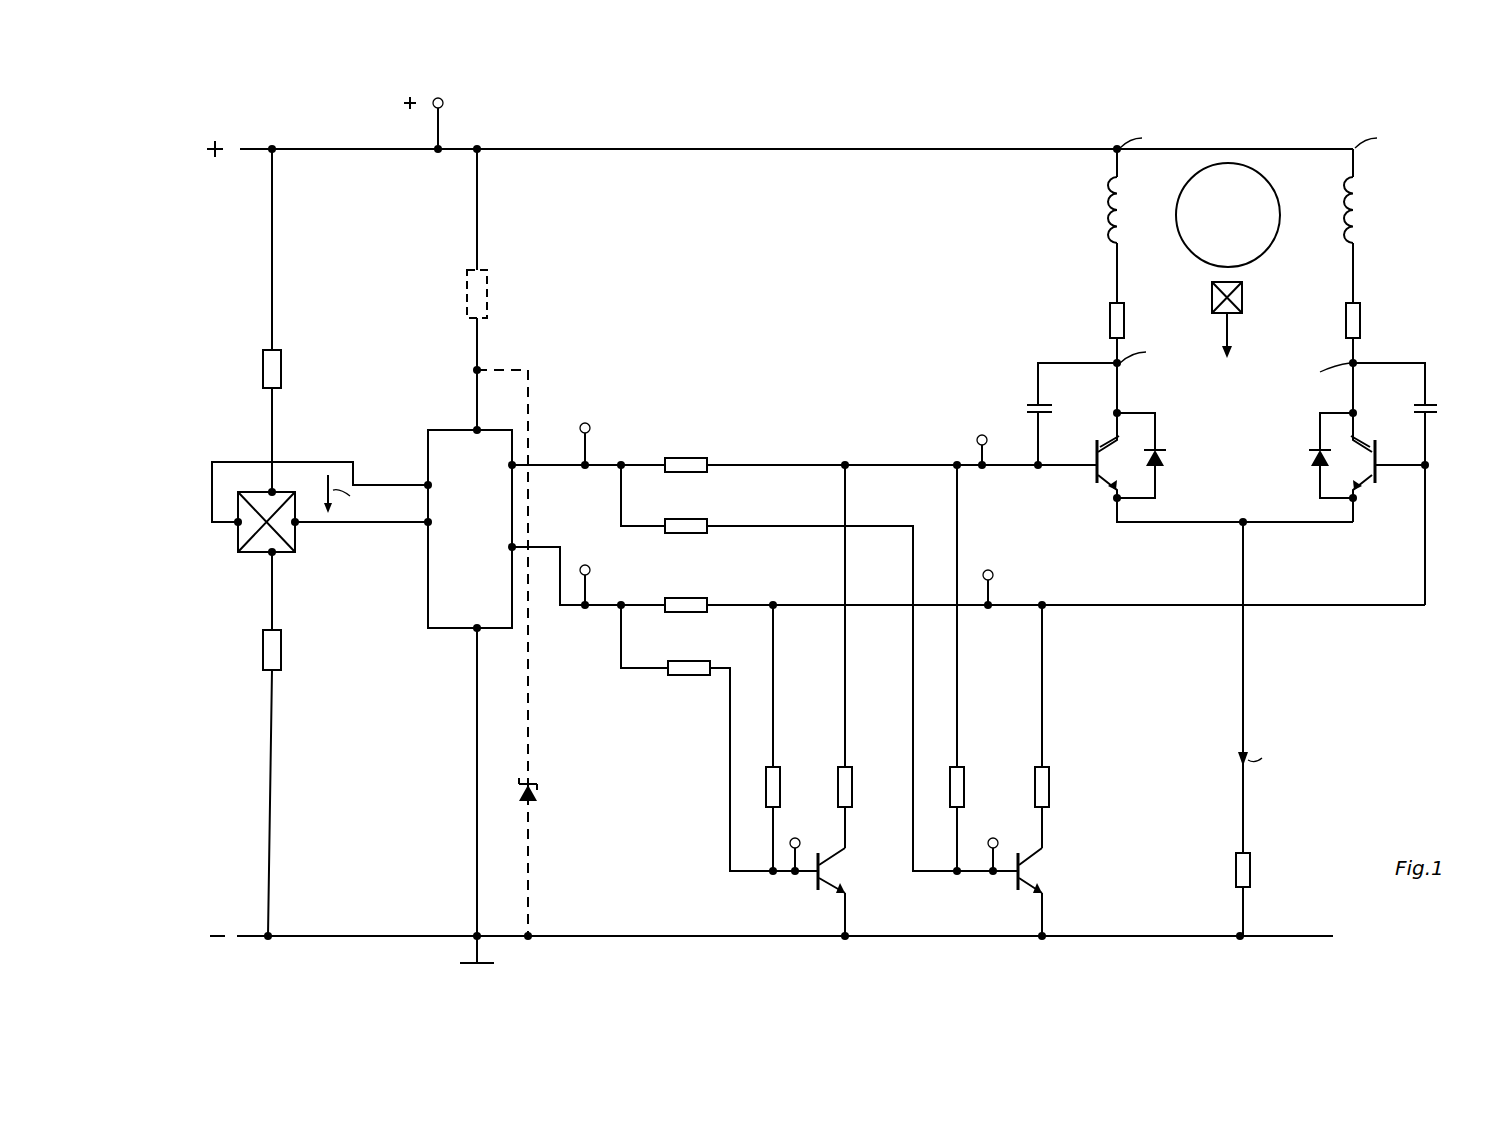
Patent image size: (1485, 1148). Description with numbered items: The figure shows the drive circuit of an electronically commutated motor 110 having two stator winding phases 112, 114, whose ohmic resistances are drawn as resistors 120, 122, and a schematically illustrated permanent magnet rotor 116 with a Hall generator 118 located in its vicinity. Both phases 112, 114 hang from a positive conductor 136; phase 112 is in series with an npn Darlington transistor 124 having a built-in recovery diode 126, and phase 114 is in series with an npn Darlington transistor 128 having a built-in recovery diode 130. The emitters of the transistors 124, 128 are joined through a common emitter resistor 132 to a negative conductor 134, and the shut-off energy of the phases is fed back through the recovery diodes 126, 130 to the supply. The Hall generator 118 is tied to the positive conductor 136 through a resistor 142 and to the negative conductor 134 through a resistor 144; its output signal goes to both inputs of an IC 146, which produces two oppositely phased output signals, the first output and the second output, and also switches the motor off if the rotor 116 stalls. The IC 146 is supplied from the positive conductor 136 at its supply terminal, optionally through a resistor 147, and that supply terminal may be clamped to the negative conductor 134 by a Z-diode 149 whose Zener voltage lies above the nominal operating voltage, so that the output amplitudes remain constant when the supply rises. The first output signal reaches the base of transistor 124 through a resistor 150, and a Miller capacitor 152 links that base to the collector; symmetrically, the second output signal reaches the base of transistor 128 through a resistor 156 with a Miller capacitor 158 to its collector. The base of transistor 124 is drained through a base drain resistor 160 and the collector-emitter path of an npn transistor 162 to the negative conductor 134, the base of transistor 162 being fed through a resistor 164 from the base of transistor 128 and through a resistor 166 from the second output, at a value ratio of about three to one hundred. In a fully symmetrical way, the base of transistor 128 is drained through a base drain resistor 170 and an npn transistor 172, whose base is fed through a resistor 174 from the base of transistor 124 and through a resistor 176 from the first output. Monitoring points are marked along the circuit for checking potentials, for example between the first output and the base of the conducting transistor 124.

The electronically commutated motor 110 is at (1266, 143).
The stator winding phase 112 is at (1105, 208).
The stator winding phase 114 is at (1362, 203).
The permanent magnet rotor 116 is at (1265, 240).
The Hall generator 118 is at (297, 540).
The ohmic resistance 120 is at (1125, 320).
The ohmic resistance 122 is at (1362, 318).
The npn Darlington transistor 124 is at (1092, 470).
The recovery diode 126 is at (1167, 452).
The npn Darlington transistor 128 is at (1380, 480).
The recovery diode 130 is at (1305, 455).
The common emitter resistor 132 is at (1251, 868).
The negative conductor 134 is at (1096, 932).
The positive conductor 136 is at (838, 150).
The resistor 142 is at (283, 372).
The resistor 144 is at (283, 655).
The IC 146 is at (427, 628).
The resistor 147 is at (488, 293).
The Z-diode 149 is at (540, 793).
The resistor 150 is at (685, 458).
The capacitor 152 is at (1030, 403).
The resistor 156 is at (695, 598).
The capacitor 158 is at (1430, 397).
The base drain resistor 160 is at (853, 772).
The npn transistor 162 is at (815, 880).
The resistor 164 is at (781, 772).
The resistor 166 is at (697, 661).
The base drain resistor 170 is at (1051, 772).
The npn transistor 172 is at (1015, 880).
The resistor 174 is at (965, 772).
The resistor 176 is at (695, 519).